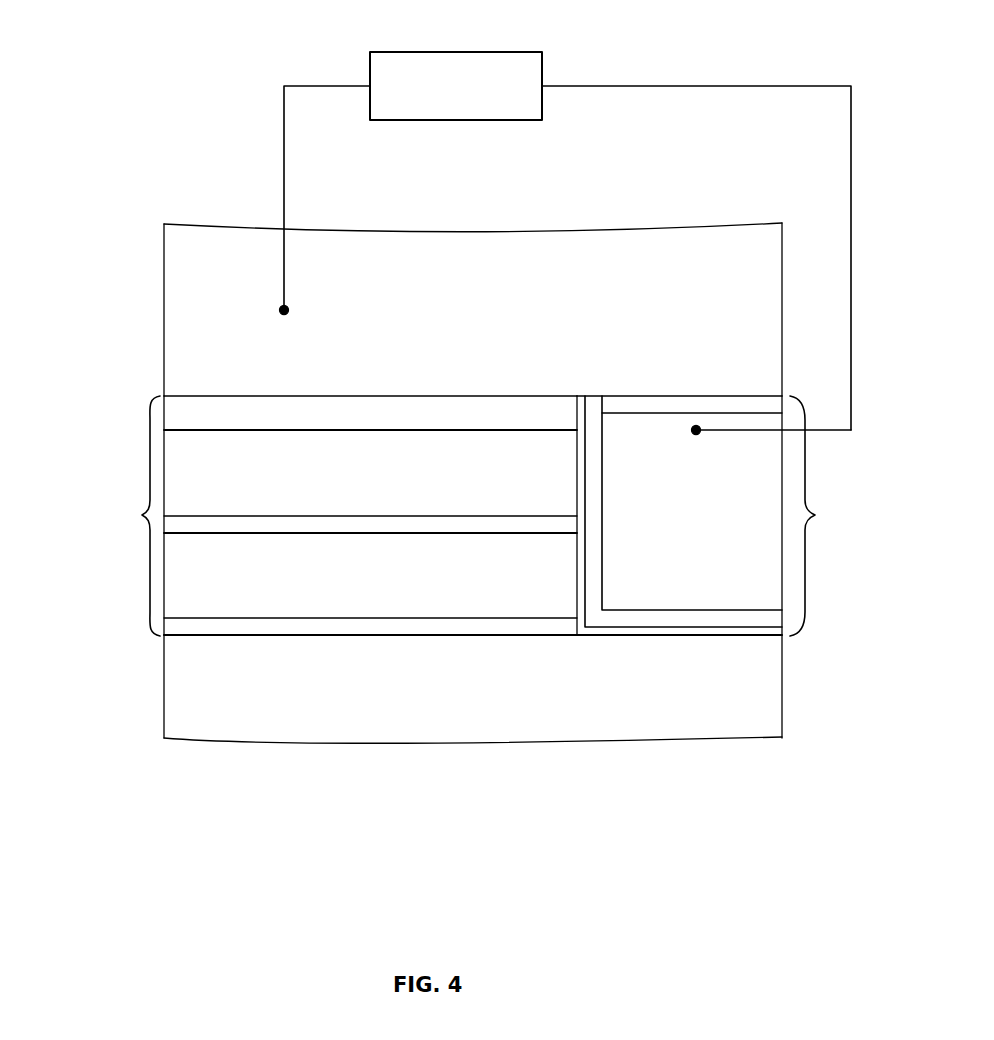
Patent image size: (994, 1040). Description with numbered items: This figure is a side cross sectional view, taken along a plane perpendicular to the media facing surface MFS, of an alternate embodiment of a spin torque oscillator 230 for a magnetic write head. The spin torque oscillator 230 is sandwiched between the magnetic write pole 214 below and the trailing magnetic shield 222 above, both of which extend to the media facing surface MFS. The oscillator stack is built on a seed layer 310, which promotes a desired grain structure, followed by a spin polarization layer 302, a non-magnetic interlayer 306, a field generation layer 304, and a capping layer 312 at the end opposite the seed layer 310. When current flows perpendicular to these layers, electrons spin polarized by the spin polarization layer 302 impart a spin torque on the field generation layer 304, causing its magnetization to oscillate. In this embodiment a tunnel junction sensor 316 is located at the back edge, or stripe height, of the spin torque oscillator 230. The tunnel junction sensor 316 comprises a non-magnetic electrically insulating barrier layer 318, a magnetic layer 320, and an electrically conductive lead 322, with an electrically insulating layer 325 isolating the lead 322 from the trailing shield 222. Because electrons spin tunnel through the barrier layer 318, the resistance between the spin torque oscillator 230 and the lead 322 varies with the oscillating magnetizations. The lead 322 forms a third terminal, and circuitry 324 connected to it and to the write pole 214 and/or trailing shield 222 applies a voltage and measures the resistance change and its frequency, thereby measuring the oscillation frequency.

The circuitry 324 is at (478, 52).
The trailing magnetic shield 222 is at (491, 294).
The media facing surface MFS is at (164, 300).
The magnetic write pole 214 is at (448, 690).
The spin torque oscillator 230 is at (150, 396).
The capping layer 312 is at (429, 414).
The field generation layer 304 is at (423, 474).
The non-magnetic interlayer 306 is at (473, 524).
The spin polarization layer 302 is at (404, 576).
The seed layer 310 is at (473, 627).
The tunnel junction sensor 316 is at (806, 584).
The barrier layer 318 is at (676, 634).
The magnetic layer 320 is at (680, 618).
The electrically insulating layer 325 is at (636, 403).
The lead 322 is at (730, 490).